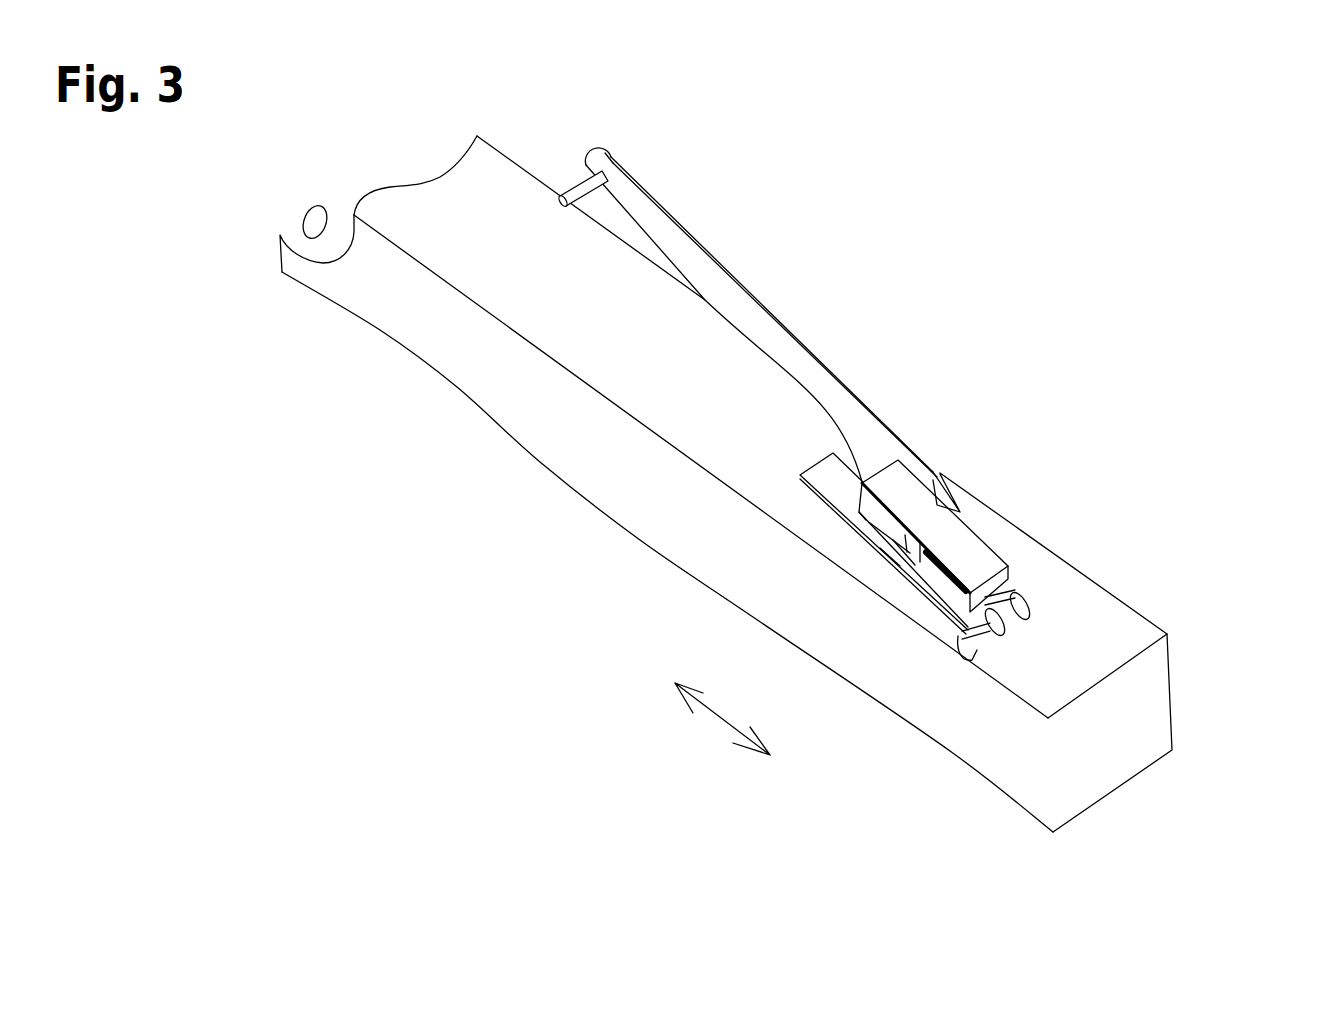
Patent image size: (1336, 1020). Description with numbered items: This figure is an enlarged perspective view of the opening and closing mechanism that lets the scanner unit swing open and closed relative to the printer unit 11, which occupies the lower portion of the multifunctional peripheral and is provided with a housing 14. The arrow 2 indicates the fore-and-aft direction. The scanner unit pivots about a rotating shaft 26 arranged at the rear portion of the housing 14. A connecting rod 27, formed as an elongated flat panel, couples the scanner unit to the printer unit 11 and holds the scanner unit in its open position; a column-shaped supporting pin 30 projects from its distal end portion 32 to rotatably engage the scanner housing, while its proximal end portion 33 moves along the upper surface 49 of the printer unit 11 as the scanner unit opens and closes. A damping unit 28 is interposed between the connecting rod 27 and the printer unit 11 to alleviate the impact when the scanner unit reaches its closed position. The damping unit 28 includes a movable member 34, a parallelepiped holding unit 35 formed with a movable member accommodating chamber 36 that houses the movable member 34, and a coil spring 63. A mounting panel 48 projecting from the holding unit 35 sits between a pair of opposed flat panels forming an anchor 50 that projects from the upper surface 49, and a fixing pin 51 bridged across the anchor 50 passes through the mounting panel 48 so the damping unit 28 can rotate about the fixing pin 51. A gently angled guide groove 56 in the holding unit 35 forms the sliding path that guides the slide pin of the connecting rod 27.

The arrow 2 is at (713, 717).
The printer unit 11 is at (1199, 689).
The housing 14 is at (1022, 782).
The rotating shaft 26 is at (302, 214).
The connecting rod 27 is at (804, 320).
The damping unit 28 is at (1004, 535).
The supporting pin 30 is at (563, 202).
The distal end portion 32 is at (642, 185).
The proximal end portion 33 is at (943, 477).
The movable member 34 is at (883, 549).
The holding unit 35 is at (1010, 567).
The movable member accommodating chamber 36 is at (883, 510).
The mounting panel 48 is at (1006, 626).
The upper surface 49 is at (1095, 600).
The anchor 50 is at (1082, 620).
The fixing pin 51 is at (983, 637).
The guide groove 56 is at (893, 565).
The coil spring 63 is at (957, 587).